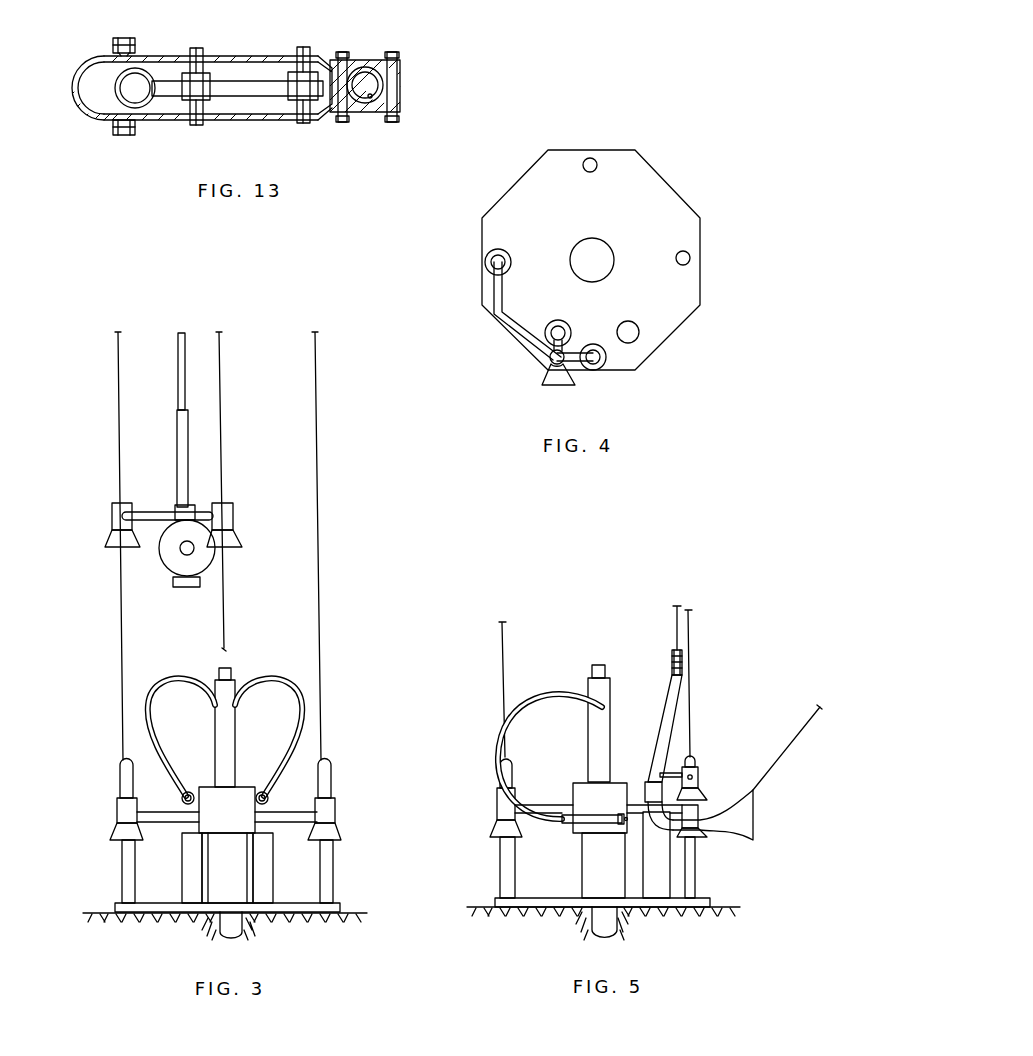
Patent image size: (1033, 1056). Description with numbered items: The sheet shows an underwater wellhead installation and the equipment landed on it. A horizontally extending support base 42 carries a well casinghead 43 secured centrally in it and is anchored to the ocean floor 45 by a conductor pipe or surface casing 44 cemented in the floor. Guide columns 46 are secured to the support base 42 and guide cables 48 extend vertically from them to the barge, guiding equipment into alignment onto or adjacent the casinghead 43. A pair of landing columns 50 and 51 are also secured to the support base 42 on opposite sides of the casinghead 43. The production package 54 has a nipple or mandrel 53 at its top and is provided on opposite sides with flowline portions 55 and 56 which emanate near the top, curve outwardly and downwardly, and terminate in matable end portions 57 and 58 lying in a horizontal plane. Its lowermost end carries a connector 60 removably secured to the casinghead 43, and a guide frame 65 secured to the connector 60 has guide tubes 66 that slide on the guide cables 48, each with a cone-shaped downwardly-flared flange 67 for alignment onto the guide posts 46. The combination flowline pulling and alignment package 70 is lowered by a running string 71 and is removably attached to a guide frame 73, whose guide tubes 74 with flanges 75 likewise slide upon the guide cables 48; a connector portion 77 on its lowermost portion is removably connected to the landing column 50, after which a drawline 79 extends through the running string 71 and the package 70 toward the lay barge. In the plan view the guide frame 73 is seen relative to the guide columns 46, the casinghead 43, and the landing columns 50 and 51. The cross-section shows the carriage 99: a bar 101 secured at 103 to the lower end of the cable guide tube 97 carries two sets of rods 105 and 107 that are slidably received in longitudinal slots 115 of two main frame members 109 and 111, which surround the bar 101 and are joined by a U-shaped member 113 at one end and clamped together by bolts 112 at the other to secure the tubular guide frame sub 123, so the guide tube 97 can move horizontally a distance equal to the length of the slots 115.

In FIG. 3, the support base 42 is at (170, 903).
In FIG. 5, the support base 42 is at (575, 898).
In FIG. 4, the well casinghead 43 is at (605, 252).
In FIG. 3, the well casinghead 43 is at (217, 872).
In FIG. 5, the well casinghead 43 is at (595, 868).
In FIG. 3, the conductor pipe 44 is at (222, 935).
In FIG. 5, the conductor pipe 44 is at (597, 930).
In FIG. 3, the ocean floor 45 is at (345, 906).
In FIG. 4, the guide columns 46 is at (597, 162).
In FIG. 3, the guide columns 46 is at (122, 856).
In FIG. 5, the guide columns 46 is at (515, 860).
In FIG. 3, the guide cables 48 is at (121, 604).
In FIG. 5, the guide cables 48 is at (502, 690).
In FIG. 4, the landing column 50 is at (545, 337).
In FIG. 3, the landing column 50 is at (181, 861).
In FIG. 5, the landing column 50 is at (655, 886).
In FIG. 4, the landing column 51 is at (640, 338).
In FIG. 3, the landing column 51 is at (273, 861).
In FIG. 3, the nipple or mandrel 53 is at (232, 674).
In FIG. 5, the nipple or mandrel 53 is at (598, 665).
In FIG. 3, the production package 54 is at (211, 722).
In FIG. 5, the production package 54 is at (581, 718).
In FIG. 3, the flowline portion 55 is at (176, 679).
In FIG. 5, the flowline portion 55 is at (560, 690).
In FIG. 3, the flowline portion 56 is at (280, 679).
In FIG. 3, the matable end portion 57 is at (182, 795).
In FIG. 5, the matable end portion 57 is at (624, 824).
In FIG. 3, the matable end portion 58 is at (268, 797).
In FIG. 3, the connector 60 is at (243, 787).
In FIG. 5, the connector 60 is at (585, 782).
In FIG. 3, the guide frame 65 is at (172, 816).
In FIG. 5, the guide frame 65 is at (556, 808).
In FIG. 3, the guide tubes 66 is at (117, 806).
In FIG. 5, the guide tubes 66 is at (497, 795).
In FIG. 3, the cone-shaped downwardly-flared flange 67 is at (117, 830).
In FIG. 5, the cone-shaped downwardly-flared flange 67 is at (495, 830).
In FIG. 4, the combination flowline pulling and alignment package 70 is at (568, 371).
In FIG. 3, the combination flowline pulling and alignment package 70 is at (195, 502).
In FIG. 5, the combination flowline pulling and alignment package 70 is at (640, 790).
In FIG. 3, the running string 71 is at (178, 368).
In FIG. 5, the running string 71 is at (670, 656).
In FIG. 4, the guide frame 73 is at (492, 314).
In FIG. 3, the guide frame 73 is at (158, 512).
In FIG. 3, the guide tubes 74 is at (233, 512).
In FIG. 5, the guide tubes 74 is at (698, 772).
In FIG. 4, the cone-shaped downwardly-flared flange 75 is at (486, 262).
In FIG. 3, the cone-shaped downwardly-flared flange 75 is at (242, 540).
In FIG. 5, the cone-shaped downwardly-flared flange 75 is at (705, 795).
In FIG. 3, the connector portion 77 is at (183, 584).
In FIG. 5, the drawline 79 is at (675, 618).
In FIG. 13, the cable guide tube 97 is at (163, 66).
In FIG. 13, the carriage 99 is at (240, 76).
In FIG. 13, the bar 101 is at (222, 82).
In FIG. 13, the securing location 103 is at (156, 106).
In FIG. 13, the rods 105 is at (197, 48).
In FIG. 13, the rods 107 is at (305, 48).
In FIG. 13, the main frame member 109 is at (258, 57).
In FIG. 13, the main frame member 111 is at (222, 116).
In FIG. 13, the bolts 112 is at (392, 57).
In FIG. 13, the U-shaped member 113 is at (80, 112).
In FIG. 13, the slots 115 is at (176, 56).
In FIG. 13, the guide frame sub 123 is at (367, 100).